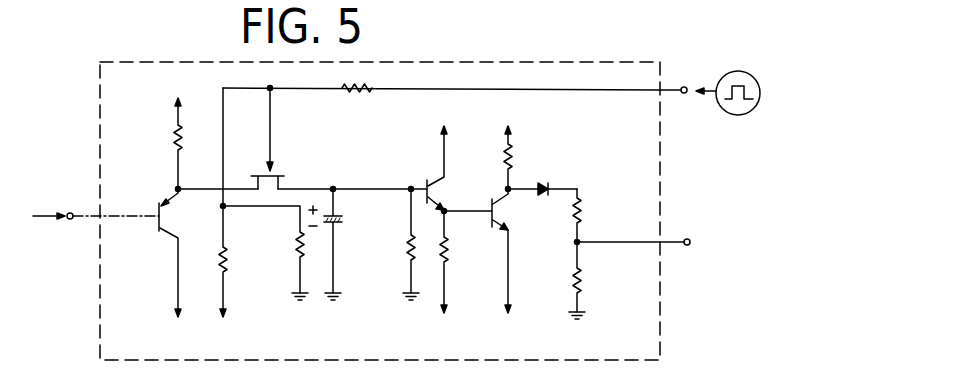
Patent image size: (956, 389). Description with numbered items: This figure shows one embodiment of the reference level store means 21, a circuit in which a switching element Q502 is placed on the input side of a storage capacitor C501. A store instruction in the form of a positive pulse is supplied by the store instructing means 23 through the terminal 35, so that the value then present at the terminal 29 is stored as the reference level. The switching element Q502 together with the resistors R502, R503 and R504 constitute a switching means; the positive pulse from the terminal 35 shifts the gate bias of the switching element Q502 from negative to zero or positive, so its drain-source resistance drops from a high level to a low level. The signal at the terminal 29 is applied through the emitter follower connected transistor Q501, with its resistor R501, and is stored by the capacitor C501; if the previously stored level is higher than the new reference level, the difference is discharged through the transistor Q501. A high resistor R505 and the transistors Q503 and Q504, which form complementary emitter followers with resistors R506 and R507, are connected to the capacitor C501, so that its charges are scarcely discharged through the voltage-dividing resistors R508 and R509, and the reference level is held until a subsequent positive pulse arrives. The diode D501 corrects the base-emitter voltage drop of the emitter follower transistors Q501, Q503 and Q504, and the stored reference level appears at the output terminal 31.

The reference level store means 21 is at (380, 196).
The store instructing means 23 is at (728, 77).
The terminal 29 is at (96, 202).
The output terminal 31 is at (640, 229).
The terminal 35 is at (462, 78).
The resistor R501 is at (166, 132).
The resistor R502 is at (241, 217).
The resistor R503 is at (265, 253).
The resistor R504 is at (362, 104).
The high resistor R505 is at (387, 244).
The resistor R506 is at (458, 279).
The resistor R507 is at (520, 148).
The voltage-dividing resistor R508 is at (601, 217).
The voltage-dividing resistor R509 is at (599, 280).
The emitter follower connected transistor Q501 is at (184, 267).
The switching element Q502 is at (302, 138).
The transistor Q503 is at (459, 159).
The transistor Q504 is at (519, 268).
The storage capacitor C501 is at (351, 244).
The diode D501 is at (553, 181).